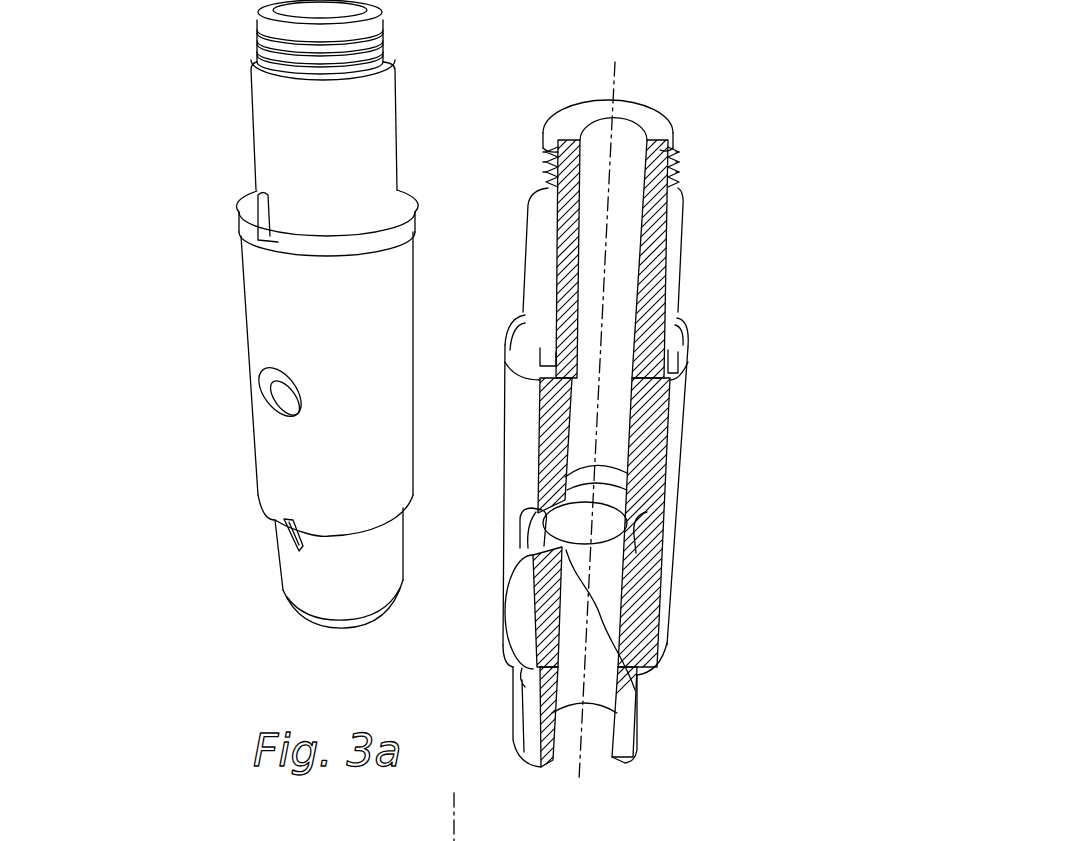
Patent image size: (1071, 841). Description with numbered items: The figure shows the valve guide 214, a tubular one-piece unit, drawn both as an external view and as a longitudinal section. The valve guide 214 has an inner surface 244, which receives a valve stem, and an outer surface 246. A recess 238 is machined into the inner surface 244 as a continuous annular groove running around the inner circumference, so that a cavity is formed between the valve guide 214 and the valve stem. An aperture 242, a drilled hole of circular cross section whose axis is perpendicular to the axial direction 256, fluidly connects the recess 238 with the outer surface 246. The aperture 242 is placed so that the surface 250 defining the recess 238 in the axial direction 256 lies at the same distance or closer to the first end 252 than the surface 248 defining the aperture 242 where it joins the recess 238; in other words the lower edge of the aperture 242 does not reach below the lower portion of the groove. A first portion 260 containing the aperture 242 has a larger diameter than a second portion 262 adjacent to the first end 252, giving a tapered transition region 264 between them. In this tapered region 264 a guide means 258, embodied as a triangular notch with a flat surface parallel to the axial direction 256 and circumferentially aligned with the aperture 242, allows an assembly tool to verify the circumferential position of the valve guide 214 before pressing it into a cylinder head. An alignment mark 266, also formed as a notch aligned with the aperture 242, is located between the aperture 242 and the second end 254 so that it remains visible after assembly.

The valve guide 214 is at (150, 209).
The recess 238 is at (641, 527).
The aperture 242 is at (268, 403).
The inner surface 244 is at (630, 446).
The outer surface 246 is at (513, 400).
The surface defining the aperture 248 is at (528, 672).
The surface defining the recess 250 is at (640, 697).
The first end 252 is at (640, 777).
The second end 254 is at (660, 88).
The axial direction 256 is at (580, 776).
The guide means 258 is at (291, 547).
The first portion 260 is at (243, 283).
The second portion 262 is at (277, 578).
The tapered transition region 264 is at (413, 512).
The alignment mark 266 is at (258, 192).